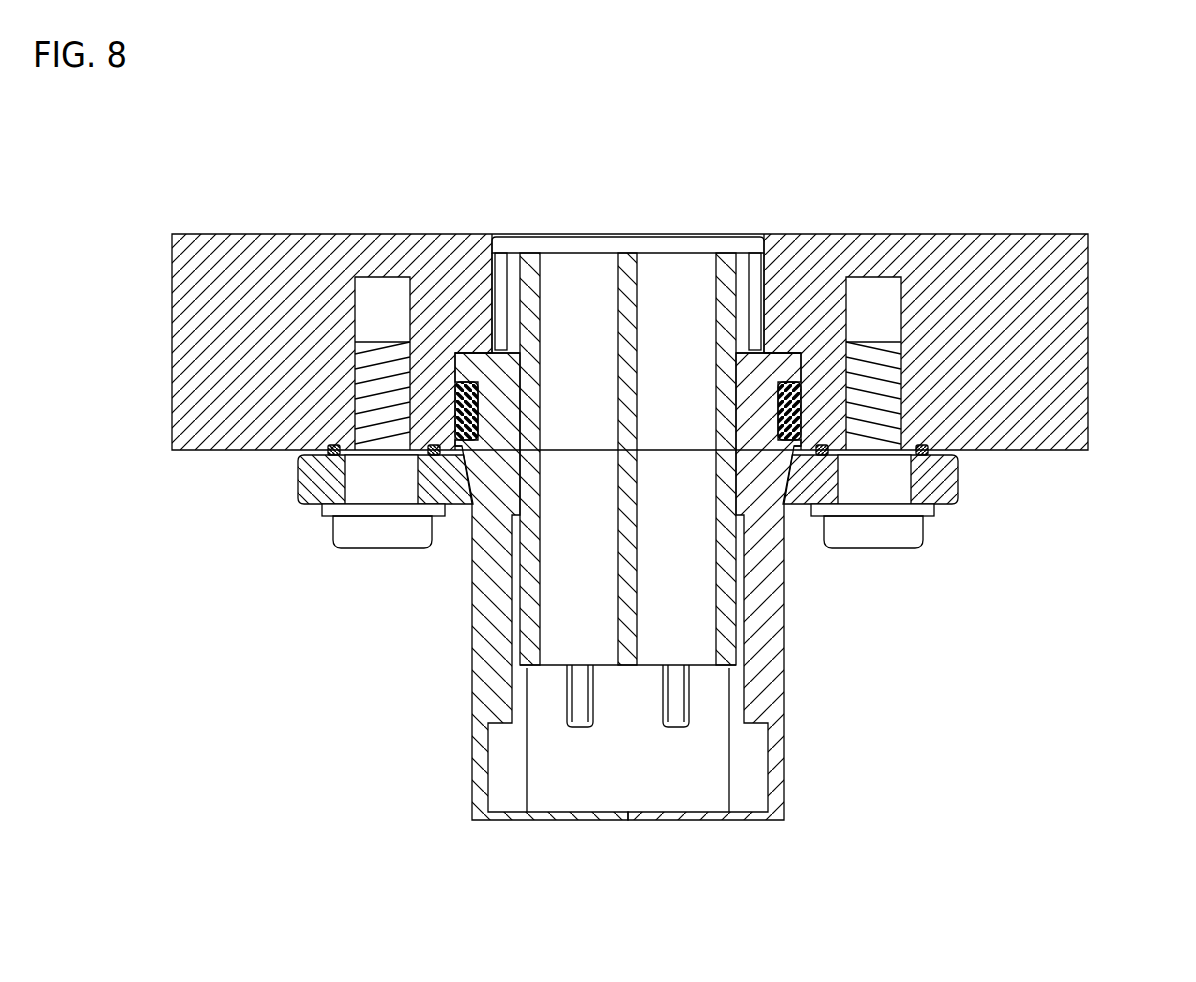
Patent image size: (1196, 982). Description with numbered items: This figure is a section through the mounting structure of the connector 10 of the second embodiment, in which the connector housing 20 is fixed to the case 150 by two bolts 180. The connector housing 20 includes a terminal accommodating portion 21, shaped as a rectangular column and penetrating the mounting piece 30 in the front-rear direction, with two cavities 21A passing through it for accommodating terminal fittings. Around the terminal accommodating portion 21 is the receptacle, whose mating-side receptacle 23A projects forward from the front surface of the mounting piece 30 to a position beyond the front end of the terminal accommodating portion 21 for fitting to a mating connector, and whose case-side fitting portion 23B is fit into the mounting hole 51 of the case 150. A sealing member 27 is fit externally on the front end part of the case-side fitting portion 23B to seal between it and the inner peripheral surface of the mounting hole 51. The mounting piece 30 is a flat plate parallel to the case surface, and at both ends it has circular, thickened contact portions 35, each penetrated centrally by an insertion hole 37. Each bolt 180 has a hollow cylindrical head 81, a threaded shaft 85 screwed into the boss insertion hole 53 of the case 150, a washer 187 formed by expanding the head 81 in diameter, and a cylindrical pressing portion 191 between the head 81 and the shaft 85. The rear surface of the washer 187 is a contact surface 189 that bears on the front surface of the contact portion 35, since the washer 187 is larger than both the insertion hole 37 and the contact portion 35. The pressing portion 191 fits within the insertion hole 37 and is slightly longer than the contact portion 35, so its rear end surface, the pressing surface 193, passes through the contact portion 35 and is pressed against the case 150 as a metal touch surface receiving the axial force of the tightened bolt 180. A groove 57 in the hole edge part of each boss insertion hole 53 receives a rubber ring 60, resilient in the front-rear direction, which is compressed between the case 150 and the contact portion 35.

The connector 10 is at (811, 820).
The connector housing 20 is at (785, 786).
The terminal accommodating portion 21 is at (728, 593).
The cavities 21A is at (545, 270).
The mating-side receptacle 23A is at (785, 655).
The case-side fitting portion 23B is at (808, 355).
The sealing member 27 is at (452, 400).
The mounting piece 30 is at (960, 490).
The contact portions 35 is at (308, 505).
The insertion hole 37 is at (417, 484).
The mounting hole 51 is at (493, 239).
The boss insertion hole 53 is at (358, 303).
The groove 57 is at (337, 455).
The rubber ring 60 is at (460, 452).
The head 81 is at (366, 550).
The shaft 85 is at (372, 343).
The case 150 is at (1057, 452).
The bolt 180 is at (411, 549).
The washer 187 is at (321, 513).
The contact surface 189 is at (323, 504).
The pressing portion 191 is at (340, 485).
The pressing surface 193 is at (333, 447).